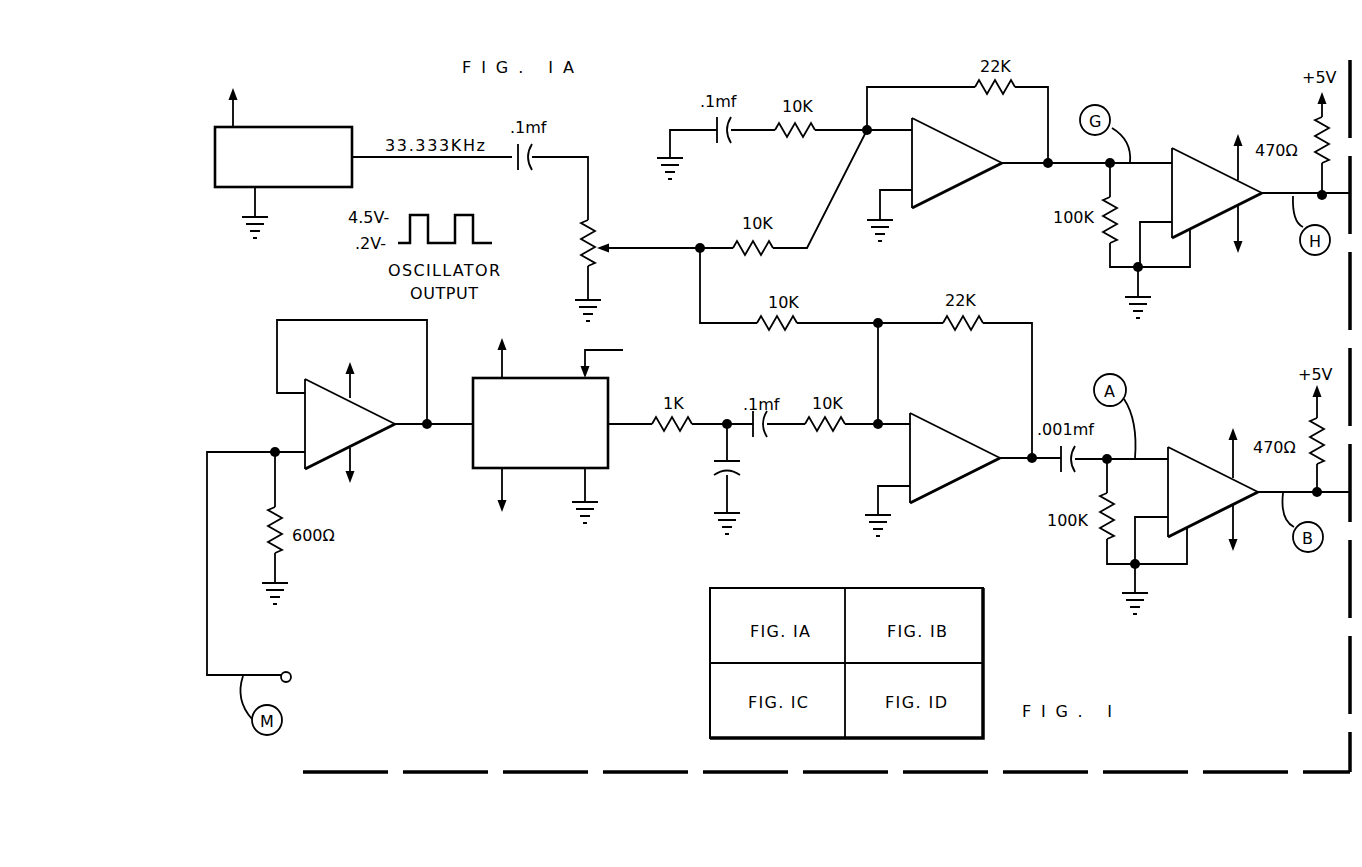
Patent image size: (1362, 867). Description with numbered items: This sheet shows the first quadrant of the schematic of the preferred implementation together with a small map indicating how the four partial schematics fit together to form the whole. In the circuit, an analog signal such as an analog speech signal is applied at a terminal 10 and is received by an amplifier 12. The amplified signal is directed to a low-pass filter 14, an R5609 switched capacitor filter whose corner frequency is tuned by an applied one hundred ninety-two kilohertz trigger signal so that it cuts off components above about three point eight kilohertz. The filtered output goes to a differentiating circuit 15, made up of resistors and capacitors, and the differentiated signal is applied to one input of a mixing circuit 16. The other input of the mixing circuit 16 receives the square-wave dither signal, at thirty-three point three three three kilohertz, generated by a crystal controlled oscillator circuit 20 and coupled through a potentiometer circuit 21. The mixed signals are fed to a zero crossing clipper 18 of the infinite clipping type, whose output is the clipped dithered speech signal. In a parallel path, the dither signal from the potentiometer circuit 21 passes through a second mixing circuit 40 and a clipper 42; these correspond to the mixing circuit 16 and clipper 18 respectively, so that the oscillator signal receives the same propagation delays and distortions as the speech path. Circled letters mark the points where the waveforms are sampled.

The terminal 10 is at (283, 672).
The amplifier 12 is at (368, 424).
The low-pass filter 14 is at (485, 457).
The differentiating circuit 15 is at (710, 455).
The mixing circuit 16 is at (967, 442).
The zero crossing clipper 18 is at (1188, 457).
The crystal controlled oscillator circuit 20 is at (312, 122).
The potentiometer circuit 21 is at (592, 228).
The mixing circuit 40 is at (948, 174).
The clipper 42 is at (1200, 165).